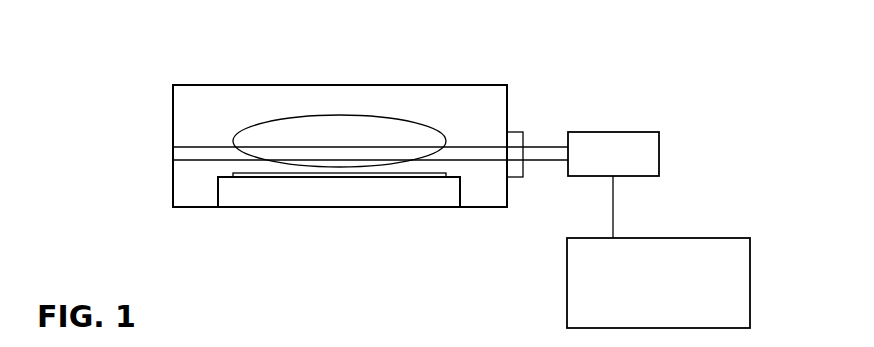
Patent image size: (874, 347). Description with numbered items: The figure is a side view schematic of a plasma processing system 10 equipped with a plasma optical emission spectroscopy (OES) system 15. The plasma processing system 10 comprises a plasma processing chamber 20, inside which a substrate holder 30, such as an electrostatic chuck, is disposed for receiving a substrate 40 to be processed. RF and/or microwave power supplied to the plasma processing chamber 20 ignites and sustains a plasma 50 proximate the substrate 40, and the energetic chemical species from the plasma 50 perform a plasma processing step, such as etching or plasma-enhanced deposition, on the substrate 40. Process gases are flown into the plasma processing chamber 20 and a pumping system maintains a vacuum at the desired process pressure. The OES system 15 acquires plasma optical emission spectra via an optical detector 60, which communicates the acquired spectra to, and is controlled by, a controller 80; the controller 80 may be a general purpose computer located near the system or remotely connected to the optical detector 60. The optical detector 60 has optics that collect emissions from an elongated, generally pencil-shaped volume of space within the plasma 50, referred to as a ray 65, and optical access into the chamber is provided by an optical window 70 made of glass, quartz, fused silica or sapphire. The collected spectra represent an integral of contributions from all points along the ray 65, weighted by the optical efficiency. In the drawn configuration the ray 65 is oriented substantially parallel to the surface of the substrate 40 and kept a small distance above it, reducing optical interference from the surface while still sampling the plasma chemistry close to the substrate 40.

The plasma processing system 10 is at (161, 48).
The plasma optical emission spectroscopy (OES) system 15 is at (621, 72).
The plasma processing chamber 20 is at (172, 181).
The substrate holder 30 is at (248, 196).
The substrate 40 is at (307, 177).
The plasma 50 is at (298, 139).
The optical detector 60 is at (601, 166).
The ray 65 is at (483, 146).
The optical window 70 is at (514, 132).
The controller 80 is at (646, 292).